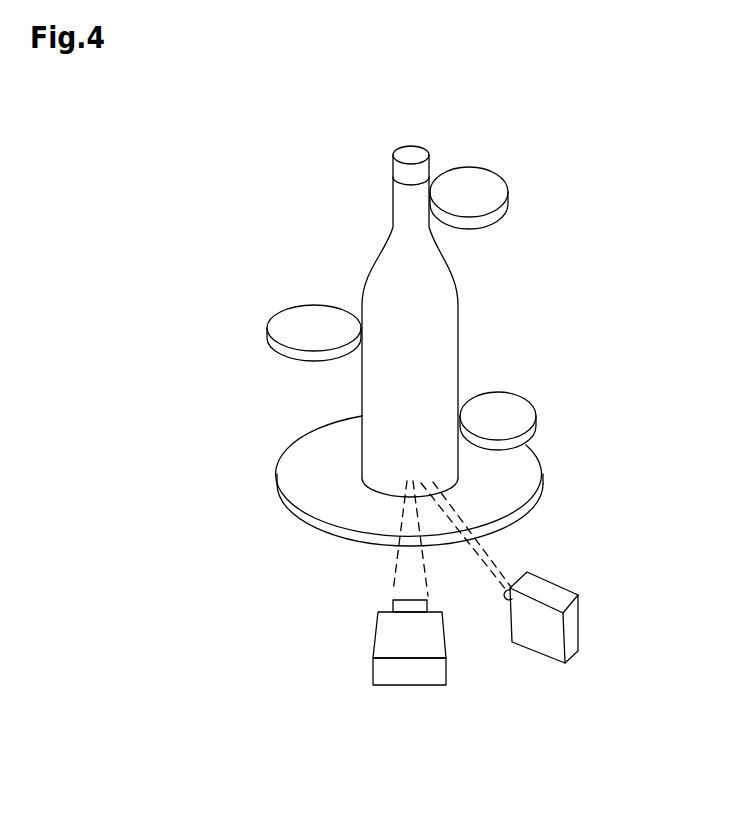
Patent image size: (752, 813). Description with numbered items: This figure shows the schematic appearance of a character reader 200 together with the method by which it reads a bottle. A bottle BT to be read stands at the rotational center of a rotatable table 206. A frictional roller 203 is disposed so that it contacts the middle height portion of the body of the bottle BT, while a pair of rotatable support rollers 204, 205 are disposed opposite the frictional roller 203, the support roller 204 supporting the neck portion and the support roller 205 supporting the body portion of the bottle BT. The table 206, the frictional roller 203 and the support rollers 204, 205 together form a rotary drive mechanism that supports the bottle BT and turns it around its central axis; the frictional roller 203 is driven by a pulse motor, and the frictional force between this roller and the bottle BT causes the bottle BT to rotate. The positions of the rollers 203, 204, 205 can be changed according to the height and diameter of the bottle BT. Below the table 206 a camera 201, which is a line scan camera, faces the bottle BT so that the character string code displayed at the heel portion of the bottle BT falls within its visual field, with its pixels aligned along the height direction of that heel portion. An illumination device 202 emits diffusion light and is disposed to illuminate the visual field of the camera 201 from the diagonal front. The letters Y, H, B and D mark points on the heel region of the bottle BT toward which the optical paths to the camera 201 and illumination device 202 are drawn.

The character reader 200 is at (307, 180).
The camera 201 is at (405, 675).
The illumination device 202 is at (573, 630).
The frictional roller 203 is at (292, 322).
The support roller 204 is at (497, 188).
The support roller 205 is at (520, 413).
The rotatable table 206 is at (530, 478).
The bottle BT is at (450, 310).
The inspection region Y is at (396, 527).
The inspection region H is at (411, 529).
The inspection region B is at (458, 526).
The inspection region D is at (469, 524).